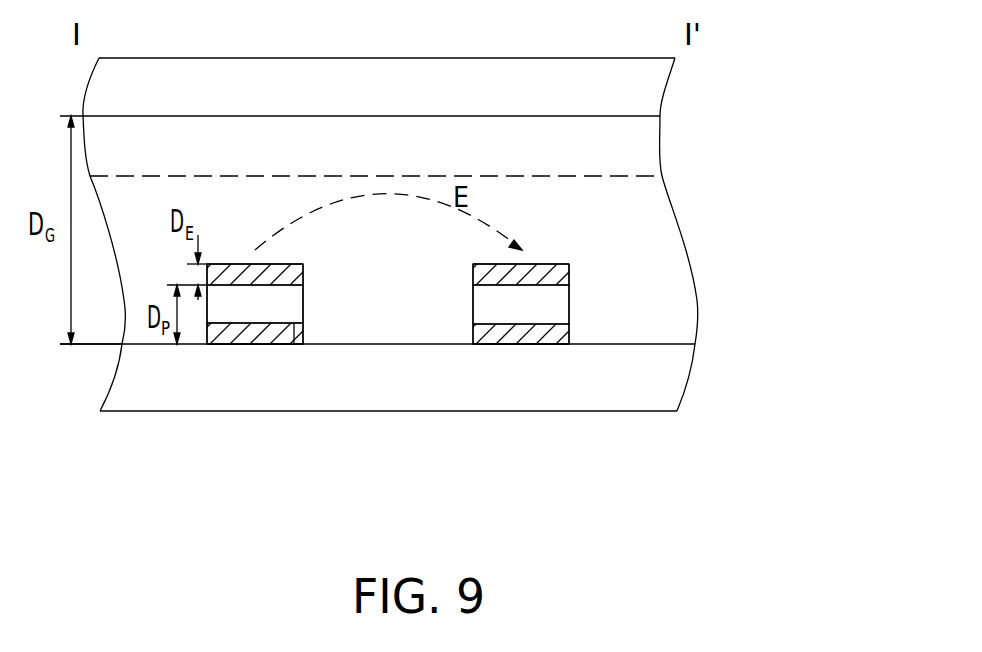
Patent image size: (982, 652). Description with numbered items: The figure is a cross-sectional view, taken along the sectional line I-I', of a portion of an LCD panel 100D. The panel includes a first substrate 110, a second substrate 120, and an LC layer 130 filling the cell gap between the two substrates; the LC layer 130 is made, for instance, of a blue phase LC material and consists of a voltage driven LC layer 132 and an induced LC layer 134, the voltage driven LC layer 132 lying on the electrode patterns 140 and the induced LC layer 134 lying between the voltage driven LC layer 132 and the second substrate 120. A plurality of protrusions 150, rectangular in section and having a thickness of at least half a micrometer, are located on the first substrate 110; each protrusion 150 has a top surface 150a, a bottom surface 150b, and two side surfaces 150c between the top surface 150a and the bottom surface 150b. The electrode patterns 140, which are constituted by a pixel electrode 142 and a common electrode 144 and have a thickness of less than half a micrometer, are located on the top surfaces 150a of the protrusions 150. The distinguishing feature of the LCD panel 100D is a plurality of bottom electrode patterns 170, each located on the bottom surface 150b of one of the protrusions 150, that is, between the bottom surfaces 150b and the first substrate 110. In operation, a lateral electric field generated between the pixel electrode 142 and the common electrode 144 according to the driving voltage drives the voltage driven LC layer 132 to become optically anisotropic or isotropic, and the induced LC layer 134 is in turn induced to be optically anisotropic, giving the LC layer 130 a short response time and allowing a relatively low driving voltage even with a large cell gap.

The LCD panel 100D is at (690, 551).
The first substrate 110 is at (655, 380).
The second substrate 120 is at (655, 92).
The LC layer 130 is at (450, 230).
The voltage driven LC layer 132 is at (655, 235).
The induced LC layer 134 is at (652, 146).
The electrode patterns 140 is at (383, 385).
The pixel electrode 142 is at (278, 275).
The common electrode 144 is at (516, 362).
The protrusions 150 is at (253, 302).
The top surface 150a is at (263, 265).
The bottom surface 150b is at (297, 345).
The side surfaces 150c is at (303, 297).
The bottom electrode patterns 170 is at (298, 333).